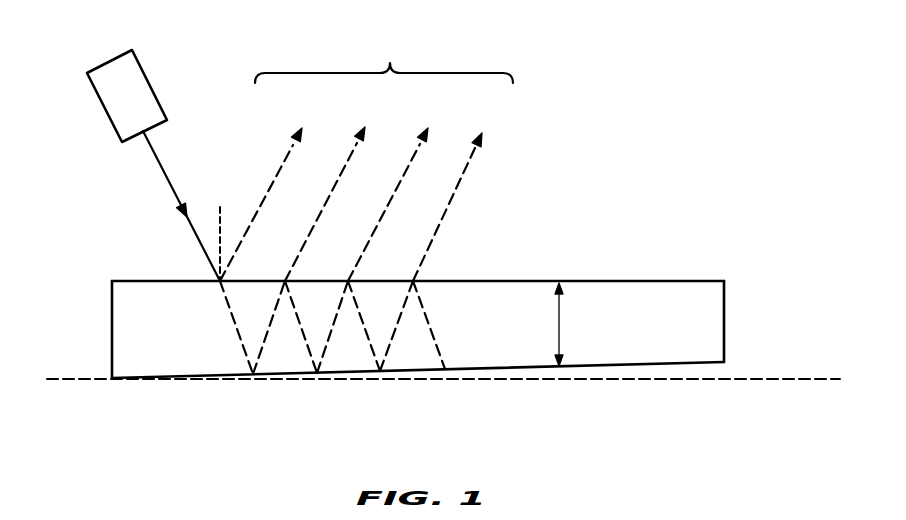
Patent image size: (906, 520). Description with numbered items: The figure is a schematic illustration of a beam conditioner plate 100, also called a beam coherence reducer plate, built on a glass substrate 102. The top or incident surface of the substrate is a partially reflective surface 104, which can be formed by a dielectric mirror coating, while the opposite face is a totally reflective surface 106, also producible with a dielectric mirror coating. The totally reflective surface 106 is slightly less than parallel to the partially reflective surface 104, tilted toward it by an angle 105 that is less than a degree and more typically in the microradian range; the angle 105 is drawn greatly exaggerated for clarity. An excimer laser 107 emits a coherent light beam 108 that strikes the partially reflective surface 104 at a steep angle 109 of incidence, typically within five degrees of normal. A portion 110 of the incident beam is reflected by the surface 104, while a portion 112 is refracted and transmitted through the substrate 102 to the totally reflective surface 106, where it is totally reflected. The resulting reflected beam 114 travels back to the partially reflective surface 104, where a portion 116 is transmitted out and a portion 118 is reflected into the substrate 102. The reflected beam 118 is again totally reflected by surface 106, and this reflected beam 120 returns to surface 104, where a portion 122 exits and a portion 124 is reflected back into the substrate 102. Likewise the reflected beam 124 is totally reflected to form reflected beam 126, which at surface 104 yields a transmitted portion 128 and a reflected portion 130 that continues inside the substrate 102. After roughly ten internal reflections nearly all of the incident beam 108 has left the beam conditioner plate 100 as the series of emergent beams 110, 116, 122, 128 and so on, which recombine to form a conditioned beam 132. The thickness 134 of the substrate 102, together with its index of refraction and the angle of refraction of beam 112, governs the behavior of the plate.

The beam conditioner plate 100 is at (683, 193).
The glass substrate 102 is at (725, 312).
The partially reflective surface 104 is at (670, 280).
The angle 105 is at (706, 388).
The totally reflective surface 106 is at (706, 320).
The excimer laser 107 is at (151, 88).
The coherent light beam 108 is at (163, 172).
The angle of incidence 109 is at (206, 218).
The reflected portion of incident beam 110 is at (269, 190).
The refracted transmitted beam 112 is at (240, 343).
The reflected beam 114 is at (270, 332).
The transmitted portion 116 is at (331, 192).
The reflected beam 118 is at (300, 325).
The reflected beam 120 is at (330, 332).
The transmitted portion 122 is at (396, 192).
The reflected beam 124 is at (363, 328).
The reflected beam 126 is at (397, 323).
The transmitted portion 128 is at (456, 194).
The reflected portion 130 is at (425, 313).
The conditioned beam 132 is at (384, 60).
The thickness 134 is at (560, 333).